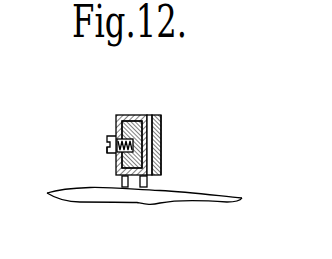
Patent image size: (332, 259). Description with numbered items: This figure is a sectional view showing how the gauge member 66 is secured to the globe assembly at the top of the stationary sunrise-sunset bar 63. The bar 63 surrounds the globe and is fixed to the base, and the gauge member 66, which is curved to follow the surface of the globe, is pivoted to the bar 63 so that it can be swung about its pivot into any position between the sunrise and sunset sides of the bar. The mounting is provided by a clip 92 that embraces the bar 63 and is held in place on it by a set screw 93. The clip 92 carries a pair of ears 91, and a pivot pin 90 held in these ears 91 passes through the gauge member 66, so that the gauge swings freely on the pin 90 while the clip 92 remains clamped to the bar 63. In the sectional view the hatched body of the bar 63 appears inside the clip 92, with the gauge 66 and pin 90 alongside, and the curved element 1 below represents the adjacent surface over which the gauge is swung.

The blade 1 is at (190, 197).
The sunrise-sunset bar 63 is at (126, 158).
The gauge member 66 is at (162, 141).
The pivot pin 90 is at (152, 153).
The ears 91 is at (162, 116).
The clip 92 is at (112, 137).
The set screw 93 is at (107, 150).